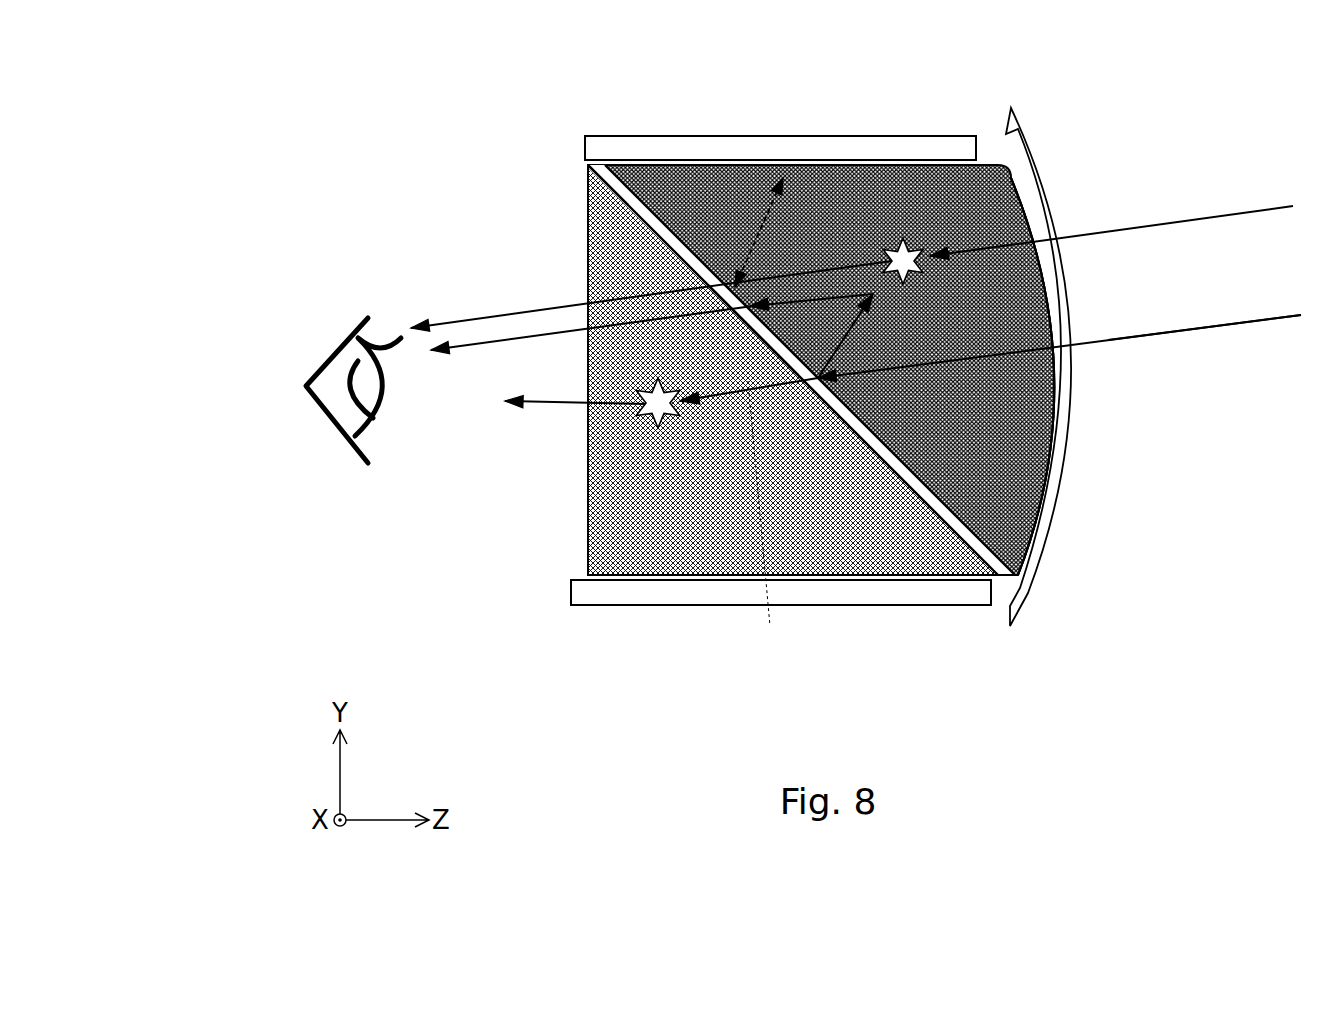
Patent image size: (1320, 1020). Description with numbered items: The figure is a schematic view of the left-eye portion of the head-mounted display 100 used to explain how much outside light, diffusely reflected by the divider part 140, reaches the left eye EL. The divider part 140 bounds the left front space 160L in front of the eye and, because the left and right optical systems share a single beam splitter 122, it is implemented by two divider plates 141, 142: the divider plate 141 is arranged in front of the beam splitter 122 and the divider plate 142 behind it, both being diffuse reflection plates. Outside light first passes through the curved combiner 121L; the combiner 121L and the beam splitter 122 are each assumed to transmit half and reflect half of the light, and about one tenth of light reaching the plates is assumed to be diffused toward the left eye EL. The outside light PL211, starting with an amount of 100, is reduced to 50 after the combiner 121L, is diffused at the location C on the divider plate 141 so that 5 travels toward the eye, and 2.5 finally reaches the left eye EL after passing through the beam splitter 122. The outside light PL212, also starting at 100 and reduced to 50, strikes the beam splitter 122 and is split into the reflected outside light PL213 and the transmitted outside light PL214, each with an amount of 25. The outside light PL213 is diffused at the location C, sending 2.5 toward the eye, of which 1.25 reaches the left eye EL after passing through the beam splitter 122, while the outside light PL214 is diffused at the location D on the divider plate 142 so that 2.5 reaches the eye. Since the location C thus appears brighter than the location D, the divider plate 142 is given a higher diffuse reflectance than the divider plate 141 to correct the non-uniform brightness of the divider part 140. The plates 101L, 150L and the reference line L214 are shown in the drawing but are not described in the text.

The first light guide plate (upper) 101L is at (890, 142).
The second light guide plate (lower) 150L is at (910, 590).
The combiner 121L is at (1008, 123).
The beam splitter 122 is at (577, 160).
The left front space 160L is at (520, 192).
The divider part 140 is at (1213, 505).
The divider plate 141 is at (1025, 530).
The divider plate 142 is at (1005, 566).
The head-mounted display 100 is at (1065, 278).
The outside light PL211 is at (1208, 207).
The outside light PL212 is at (1178, 320).
The outside light PL213 is at (1040, 307).
The outside light PL214 is at (540, 398).
The reference line L214 is at (770, 522).
The left eye EL is at (318, 408).
The location C is at (903, 261).
The location D is at (657, 403).
The amount of outside light 50 is at (1015, 376).
The amount of outside light 25 is at (801, 354).
The amount of outside light 5 is at (775, 232).
The amount of outside light 2.5 is at (674, 359).
The amount of outside light 1.25 is at (538, 366).